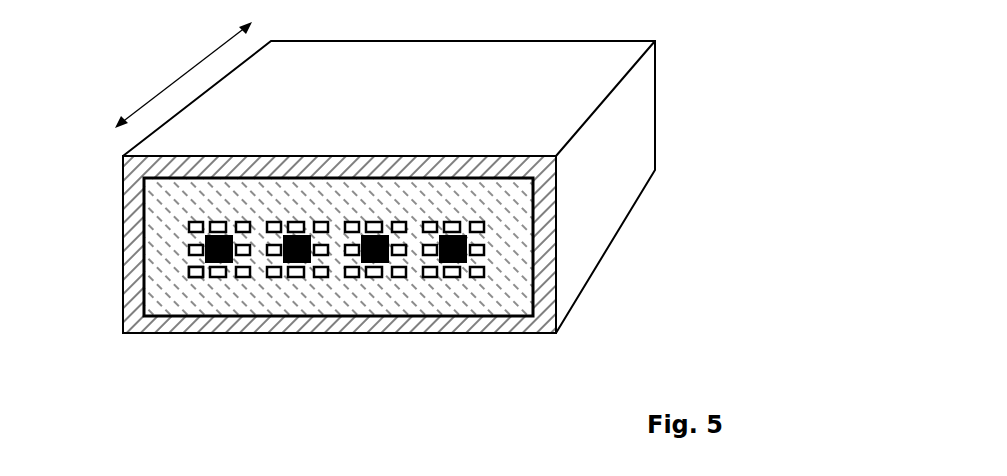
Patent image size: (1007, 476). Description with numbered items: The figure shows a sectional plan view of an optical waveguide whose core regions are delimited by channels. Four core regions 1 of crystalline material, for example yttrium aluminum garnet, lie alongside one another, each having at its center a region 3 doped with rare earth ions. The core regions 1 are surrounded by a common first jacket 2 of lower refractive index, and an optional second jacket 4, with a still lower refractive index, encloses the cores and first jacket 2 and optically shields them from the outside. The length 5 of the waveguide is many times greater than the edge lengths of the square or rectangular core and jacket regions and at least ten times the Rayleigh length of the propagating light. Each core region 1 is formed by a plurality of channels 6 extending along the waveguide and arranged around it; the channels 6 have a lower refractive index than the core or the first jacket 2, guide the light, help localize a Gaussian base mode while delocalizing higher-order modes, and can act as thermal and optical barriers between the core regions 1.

The core regions 1 is at (193, 236).
The first jacket 2 is at (463, 302).
The region doped with rare earth ions 3 is at (367, 262).
The second jacket 4 is at (547, 273).
The length of the optical waveguide 5 is at (183, 75).
The channels 6 is at (195, 278).